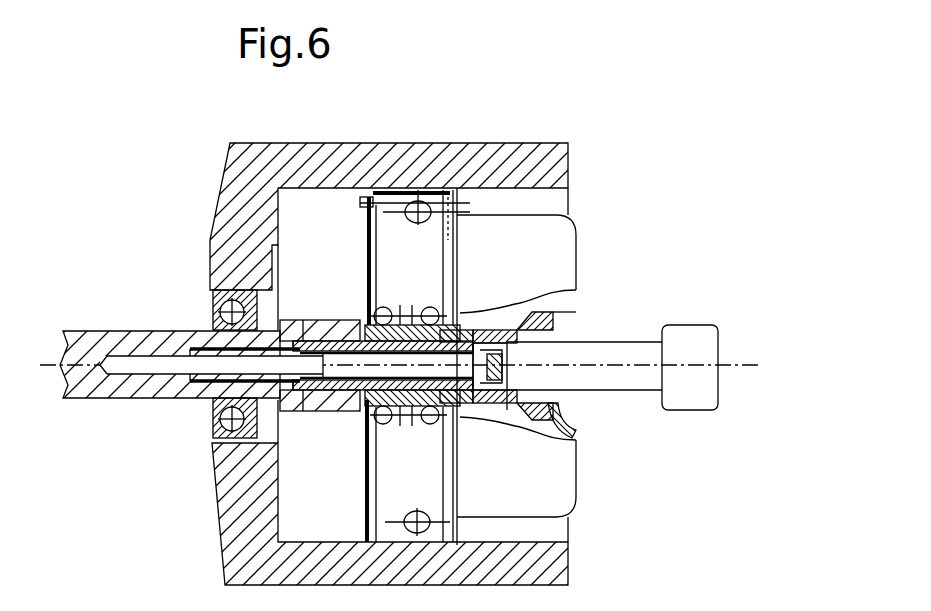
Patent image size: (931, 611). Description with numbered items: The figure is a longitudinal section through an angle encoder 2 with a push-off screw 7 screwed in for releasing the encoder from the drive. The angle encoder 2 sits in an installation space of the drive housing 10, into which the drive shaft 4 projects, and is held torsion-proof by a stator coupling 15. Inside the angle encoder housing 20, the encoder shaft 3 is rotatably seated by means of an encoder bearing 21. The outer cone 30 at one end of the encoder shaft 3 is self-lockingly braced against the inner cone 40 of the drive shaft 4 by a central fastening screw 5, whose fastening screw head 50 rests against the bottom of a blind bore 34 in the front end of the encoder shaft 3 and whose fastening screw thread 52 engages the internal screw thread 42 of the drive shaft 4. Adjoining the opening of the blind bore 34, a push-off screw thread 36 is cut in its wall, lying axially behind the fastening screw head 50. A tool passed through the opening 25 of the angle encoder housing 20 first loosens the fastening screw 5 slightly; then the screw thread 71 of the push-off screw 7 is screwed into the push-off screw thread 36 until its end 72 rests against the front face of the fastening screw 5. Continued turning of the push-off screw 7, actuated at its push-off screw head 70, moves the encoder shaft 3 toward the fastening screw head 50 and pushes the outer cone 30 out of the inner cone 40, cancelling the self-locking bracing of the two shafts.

The angle encoder 2 is at (582, 240).
The encoder shaft 3 is at (345, 392).
The drive shaft 4 is at (140, 392).
The fastening screw 5 is at (360, 358).
The push-off screw 7 is at (693, 425).
The drive housing 10 is at (498, 163).
The stator coupling 15 is at (384, 216).
The angle encoder housing 20 is at (553, 242).
The encoder bearing 21 is at (388, 420).
The opening 25 is at (555, 404).
The outer cone 30 is at (318, 391).
The blind bore 34 is at (487, 406).
The push-off screw thread 36 is at (573, 292).
The inner cone 40 is at (304, 330).
The internal screw thread 42 is at (208, 380).
The fastening screw head 50 is at (482, 343).
The fastening screw thread 52 is at (233, 350).
The push-off screw head 70 is at (693, 336).
The screw thread 71 is at (609, 340).
The end 72 is at (507, 410).